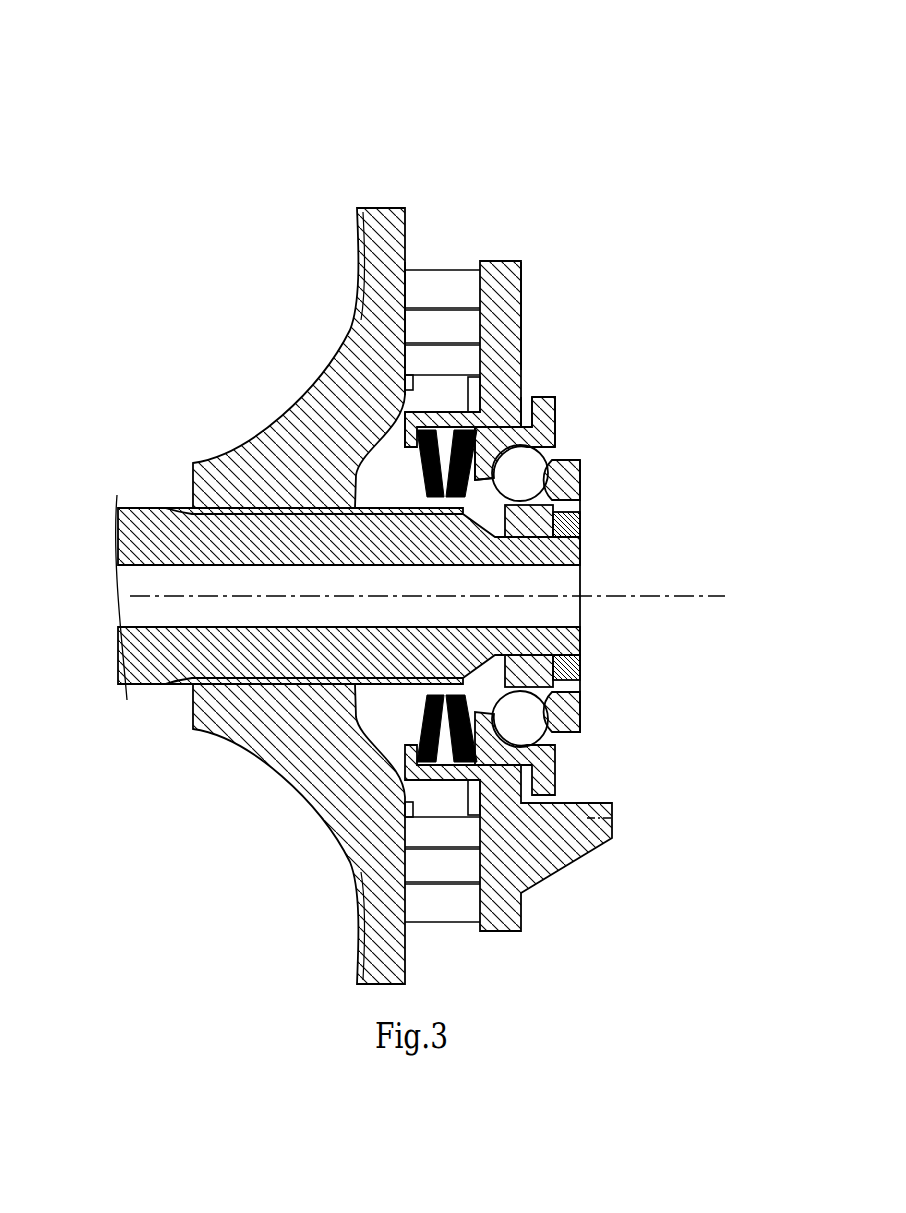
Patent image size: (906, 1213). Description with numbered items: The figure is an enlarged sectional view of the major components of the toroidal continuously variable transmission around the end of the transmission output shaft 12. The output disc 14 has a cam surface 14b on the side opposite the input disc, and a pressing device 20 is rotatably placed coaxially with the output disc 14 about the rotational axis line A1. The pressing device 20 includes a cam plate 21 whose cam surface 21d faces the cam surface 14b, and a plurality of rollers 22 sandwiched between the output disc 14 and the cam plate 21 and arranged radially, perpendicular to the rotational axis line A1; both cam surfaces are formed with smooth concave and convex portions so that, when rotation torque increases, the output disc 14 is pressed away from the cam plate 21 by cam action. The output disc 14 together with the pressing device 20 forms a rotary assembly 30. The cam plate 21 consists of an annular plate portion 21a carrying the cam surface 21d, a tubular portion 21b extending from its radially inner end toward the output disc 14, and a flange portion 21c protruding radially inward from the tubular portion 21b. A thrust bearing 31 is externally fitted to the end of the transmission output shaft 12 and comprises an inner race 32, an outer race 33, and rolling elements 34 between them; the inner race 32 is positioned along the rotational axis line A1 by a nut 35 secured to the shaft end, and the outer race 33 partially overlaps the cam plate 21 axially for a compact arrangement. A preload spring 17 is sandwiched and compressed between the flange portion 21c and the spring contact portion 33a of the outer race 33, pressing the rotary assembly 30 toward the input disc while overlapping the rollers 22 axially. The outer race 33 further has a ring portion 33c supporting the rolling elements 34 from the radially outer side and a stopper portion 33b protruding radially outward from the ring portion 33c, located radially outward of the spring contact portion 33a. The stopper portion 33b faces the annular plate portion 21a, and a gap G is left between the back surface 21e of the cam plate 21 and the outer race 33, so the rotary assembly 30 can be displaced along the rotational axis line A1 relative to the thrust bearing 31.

The transmission output shaft 12 is at (142, 540).
The output disc 14 is at (370, 208).
The cam surface 14b is at (425, 282).
The preload spring 17 is at (420, 470).
The pressing device 20 is at (521, 268).
The cam plate 21 is at (503, 261).
The annular plate portion 21a is at (521, 292).
The tubular portion 21b is at (463, 410).
The flange portion 21c is at (407, 447).
The cam surface 21d is at (521, 350).
The back surface 21e is at (521, 313).
The rollers 22 is at (447, 362).
The rotary assembly 30 is at (548, 87).
The thrust bearing 31 is at (718, 380).
The inner race 32 is at (580, 490).
The outer race 33 is at (555, 420).
The spring contact portion 33a is at (480, 466).
The stopper portion 33b is at (548, 405).
The ring portion 33c is at (525, 400).
The rolling elements 34 is at (533, 478).
The nut 35 is at (580, 530).
The rotational axis line A1 is at (683, 596).
The gap G is at (528, 405).